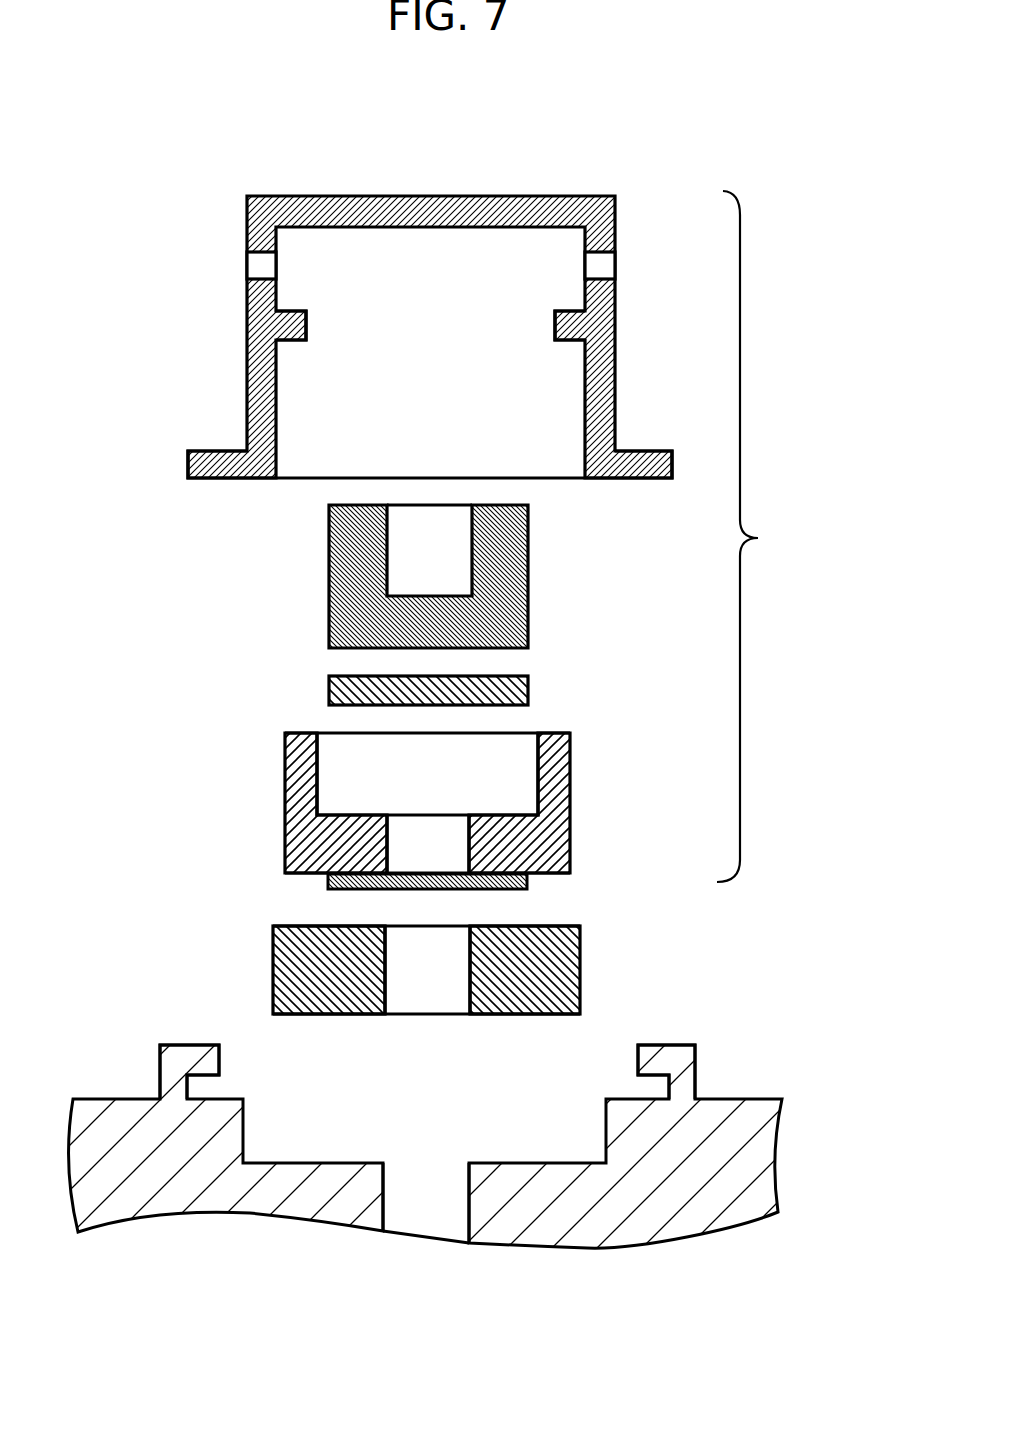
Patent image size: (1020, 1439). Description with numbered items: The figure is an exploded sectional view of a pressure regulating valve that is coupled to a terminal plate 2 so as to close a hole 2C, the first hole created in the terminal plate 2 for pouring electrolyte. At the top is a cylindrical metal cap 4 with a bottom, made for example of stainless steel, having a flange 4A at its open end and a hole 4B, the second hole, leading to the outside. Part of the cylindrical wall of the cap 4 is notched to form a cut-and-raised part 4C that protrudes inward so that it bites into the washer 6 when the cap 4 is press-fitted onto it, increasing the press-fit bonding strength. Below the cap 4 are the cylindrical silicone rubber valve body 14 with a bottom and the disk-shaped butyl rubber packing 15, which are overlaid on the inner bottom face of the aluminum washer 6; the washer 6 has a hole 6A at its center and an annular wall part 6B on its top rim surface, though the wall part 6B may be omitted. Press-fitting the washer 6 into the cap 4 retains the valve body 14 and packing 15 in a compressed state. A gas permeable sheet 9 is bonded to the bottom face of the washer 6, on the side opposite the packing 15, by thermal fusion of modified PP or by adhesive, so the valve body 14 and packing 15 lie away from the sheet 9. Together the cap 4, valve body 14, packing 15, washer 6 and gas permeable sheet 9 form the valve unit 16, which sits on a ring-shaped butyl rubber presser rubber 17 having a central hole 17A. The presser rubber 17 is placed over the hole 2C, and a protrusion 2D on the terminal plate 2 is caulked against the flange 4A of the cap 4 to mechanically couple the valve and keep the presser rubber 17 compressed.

The terminal plate 2 is at (745, 1152).
The hole 2C is at (427, 1212).
The protrusion 2D is at (192, 1045).
The cap 4 is at (516, 190).
The flange 4A is at (218, 448).
The hole 4B is at (260, 271).
The cut-and-raised part 4C is at (287, 310).
The washer 6 is at (570, 822).
The hole 6A is at (403, 837).
The wall part 6B is at (570, 752).
The gas permeable sheet 9 is at (527, 881).
The valve body 14 is at (528, 568).
The packing 15 is at (528, 689).
The valve unit 16 is at (469, 516).
The presser rubber 17 is at (580, 967).
The hole 17A is at (413, 945).